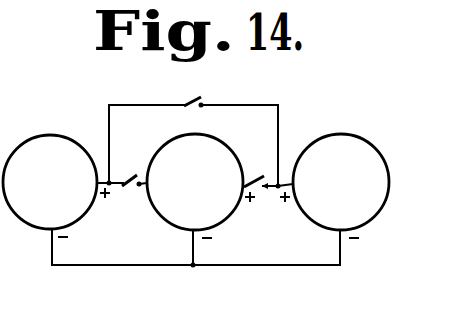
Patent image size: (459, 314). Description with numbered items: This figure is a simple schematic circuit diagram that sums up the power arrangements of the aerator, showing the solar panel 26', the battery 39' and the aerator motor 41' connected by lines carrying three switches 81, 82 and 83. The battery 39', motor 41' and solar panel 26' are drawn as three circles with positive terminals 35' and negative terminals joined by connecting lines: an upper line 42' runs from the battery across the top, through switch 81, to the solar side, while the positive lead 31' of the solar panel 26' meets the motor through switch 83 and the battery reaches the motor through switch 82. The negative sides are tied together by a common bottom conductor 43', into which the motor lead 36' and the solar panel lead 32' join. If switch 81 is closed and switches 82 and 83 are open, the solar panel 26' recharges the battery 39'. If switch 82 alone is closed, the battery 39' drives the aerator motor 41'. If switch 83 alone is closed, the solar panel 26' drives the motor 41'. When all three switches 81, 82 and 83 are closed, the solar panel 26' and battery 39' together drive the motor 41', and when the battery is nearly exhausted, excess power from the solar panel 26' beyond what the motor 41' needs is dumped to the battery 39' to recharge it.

The battery 39' is at (50, 164).
The aerator motor 41' is at (198, 173).
The solar panel 26' is at (341, 168).
The bypass conductor 42' is at (174, 128).
The switch 81 is at (183, 98).
The switch 82 is at (131, 175).
The switch 83 is at (251, 188).
The terminals 35' is at (208, 188).
The solar cell positive lead 31' is at (310, 165).
The motor negative lead 36' is at (172, 249).
The common negative conductor 43' is at (196, 262).
The solar cell negative lead 32' is at (307, 248).